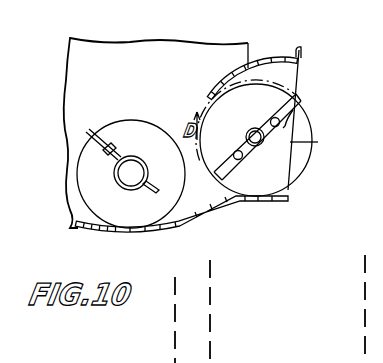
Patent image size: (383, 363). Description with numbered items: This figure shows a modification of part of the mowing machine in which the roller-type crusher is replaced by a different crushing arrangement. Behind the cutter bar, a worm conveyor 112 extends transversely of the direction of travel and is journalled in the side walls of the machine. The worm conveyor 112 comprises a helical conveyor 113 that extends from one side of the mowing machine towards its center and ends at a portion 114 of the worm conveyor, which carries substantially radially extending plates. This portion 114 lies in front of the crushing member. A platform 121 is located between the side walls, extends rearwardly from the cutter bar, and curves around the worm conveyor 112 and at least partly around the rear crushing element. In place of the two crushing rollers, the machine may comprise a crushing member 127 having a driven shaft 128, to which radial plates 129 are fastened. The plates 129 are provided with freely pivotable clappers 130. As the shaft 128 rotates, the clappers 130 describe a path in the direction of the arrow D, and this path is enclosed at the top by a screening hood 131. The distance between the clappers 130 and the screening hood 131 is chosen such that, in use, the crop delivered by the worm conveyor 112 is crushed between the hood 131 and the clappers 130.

The worm conveyor 112 is at (135, 114).
The helical conveyor 113 is at (83, 162).
The portion of the worm conveyor 114 is at (118, 190).
The platform 121 is at (218, 224).
The crushing member 127 is at (313, 106).
The driven shaft 128 is at (248, 135).
The radial plates 129 is at (318, 142).
The clappers 130 is at (296, 122).
The screening hood 131 is at (285, 62).